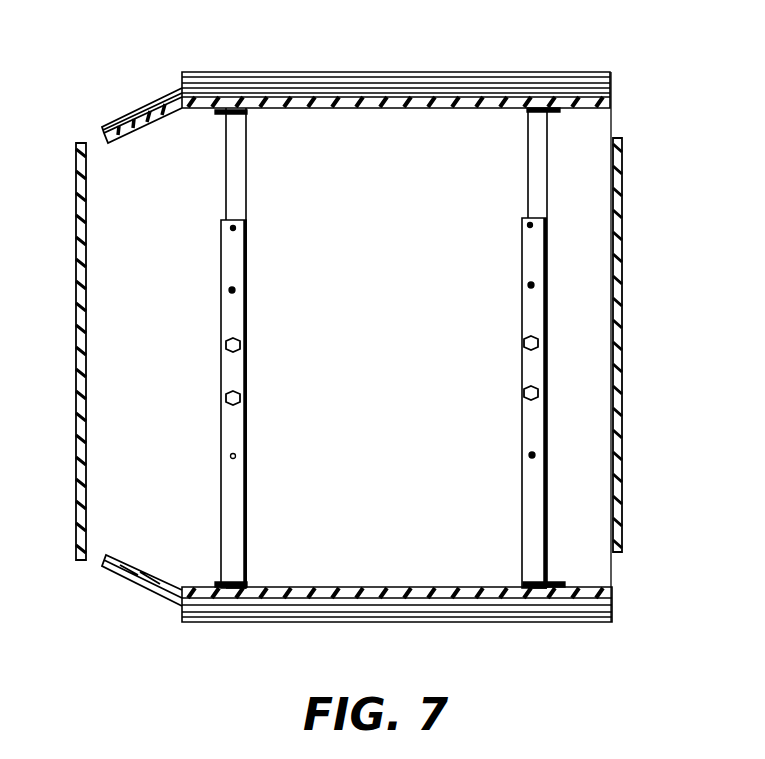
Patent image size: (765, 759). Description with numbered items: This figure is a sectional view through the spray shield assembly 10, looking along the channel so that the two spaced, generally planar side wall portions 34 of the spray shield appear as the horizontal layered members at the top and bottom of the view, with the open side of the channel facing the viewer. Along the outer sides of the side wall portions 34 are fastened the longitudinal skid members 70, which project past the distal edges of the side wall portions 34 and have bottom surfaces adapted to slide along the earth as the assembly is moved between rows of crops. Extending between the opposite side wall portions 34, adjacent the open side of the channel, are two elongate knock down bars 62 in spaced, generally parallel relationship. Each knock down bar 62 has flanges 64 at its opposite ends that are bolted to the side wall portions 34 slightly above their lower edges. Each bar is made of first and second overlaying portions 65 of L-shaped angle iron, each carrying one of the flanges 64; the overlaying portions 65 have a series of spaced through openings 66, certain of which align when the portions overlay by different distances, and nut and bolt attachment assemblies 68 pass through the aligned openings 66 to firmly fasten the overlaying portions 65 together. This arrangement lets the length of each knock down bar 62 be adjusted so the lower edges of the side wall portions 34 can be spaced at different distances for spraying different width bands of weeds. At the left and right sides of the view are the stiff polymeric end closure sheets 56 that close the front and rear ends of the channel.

The spray shield assembly 10 is at (624, 80).
The side wall portions 34 is at (393, 109).
The end closure sheets 56 is at (76, 262).
The knock down bars 62 is at (248, 262).
The flanges 64 is at (216, 114).
The overlaying portions 65 is at (247, 160).
The through openings 66 is at (230, 456).
The nut and bolt attachment assemblies 68 is at (223, 398).
The skid members 70 is at (463, 72).